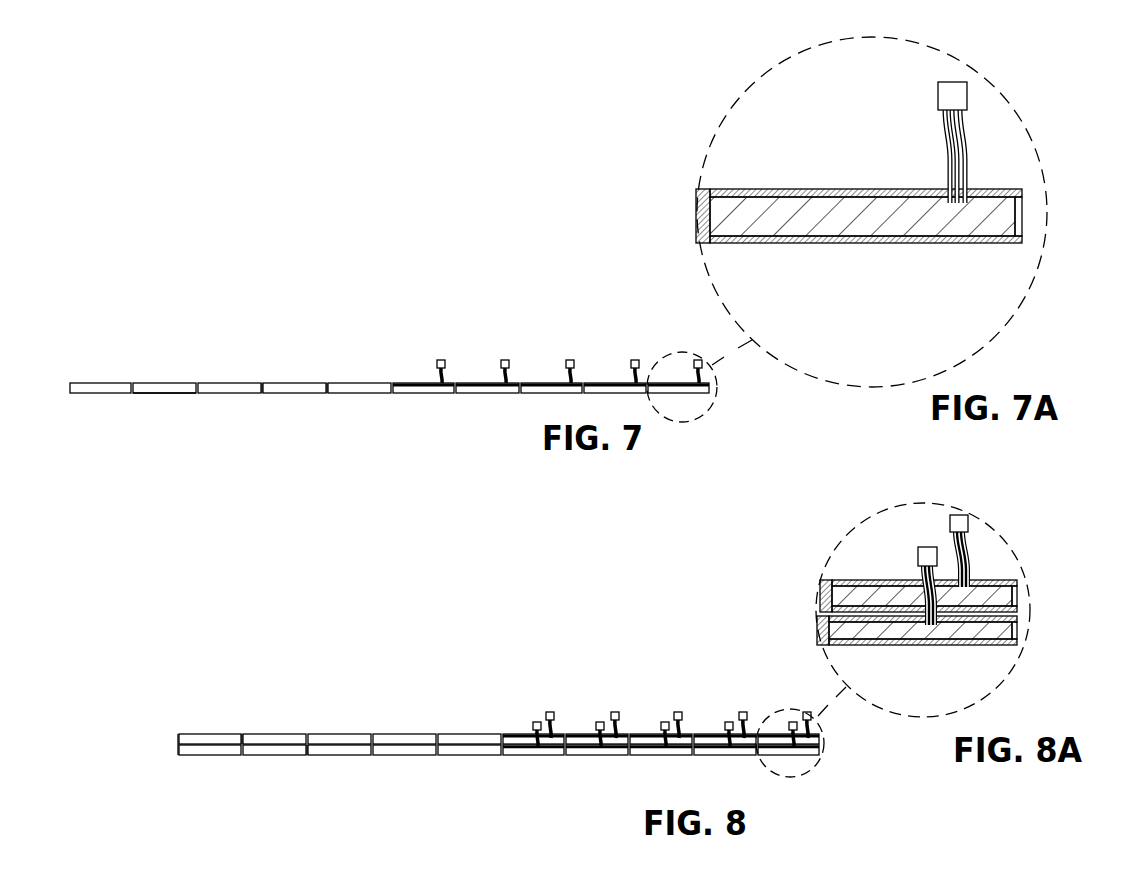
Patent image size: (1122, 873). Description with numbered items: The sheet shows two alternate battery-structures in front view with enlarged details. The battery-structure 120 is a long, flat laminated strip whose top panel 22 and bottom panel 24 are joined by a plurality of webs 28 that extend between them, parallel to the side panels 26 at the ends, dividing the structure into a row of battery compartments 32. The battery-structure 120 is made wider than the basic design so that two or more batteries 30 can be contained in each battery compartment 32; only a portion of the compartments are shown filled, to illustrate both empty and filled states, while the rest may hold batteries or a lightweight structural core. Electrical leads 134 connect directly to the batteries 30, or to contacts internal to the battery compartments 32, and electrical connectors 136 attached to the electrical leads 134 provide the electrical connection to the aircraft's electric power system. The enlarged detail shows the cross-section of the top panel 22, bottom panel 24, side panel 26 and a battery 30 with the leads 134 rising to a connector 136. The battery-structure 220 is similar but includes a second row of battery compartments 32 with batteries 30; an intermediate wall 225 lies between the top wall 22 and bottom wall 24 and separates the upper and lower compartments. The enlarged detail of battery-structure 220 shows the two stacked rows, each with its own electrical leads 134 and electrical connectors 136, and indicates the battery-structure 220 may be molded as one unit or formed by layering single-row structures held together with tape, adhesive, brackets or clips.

In FIG. 7, the top panel 22 is at (191, 383).
In FIG. 7A, the top panel 22 is at (836, 189).
In FIG. 8, the top panel 22 is at (218, 734).
In FIG. 8A, the top panel 22 is at (878, 580).
In FIG. 7, the bottom panel 24 is at (175, 393).
In FIG. 7A, the bottom panel 24 is at (853, 243).
In FIG. 8, the bottom panel 24 is at (217, 755).
In FIG. 8A, the bottom panel 24 is at (958, 645).
In FIG. 7, the side panels 26 is at (70, 391).
In FIG. 7A, the side panels 26 is at (1022, 225).
In FIG. 8, the side panels 26 is at (178, 737).
In FIG. 8A, the side panels 26 is at (1017, 630).
In FIG. 7, the webs 28 is at (262, 393).
In FIG. 7A, the webs 28 is at (688, 212).
In FIG. 8, the webs 28 is at (245, 737).
In FIG. 8A, the webs 28 is at (820, 595).
In FIG. 7, the batteries 30 is at (437, 393).
In FIG. 7A, the batteries 30 is at (923, 230).
In FIG. 8, the batteries 30 is at (585, 737).
In FIG. 8A, the batteries 30 is at (1012, 583).
In FIG. 7, the battery compartments 32 is at (347, 383).
In FIG. 8, the battery compartments 32 is at (282, 748).
In FIG. 7, the battery-structure 120 is at (285, 372).
In FIG. 7, the electrical leads 134 is at (509, 372).
In FIG. 7A, the electrical leads 134 is at (965, 152).
In FIG. 8, the electrical leads 134 is at (678, 712).
In FIG. 8A, the electrical leads 134 is at (969, 545).
In FIG. 7A, the electrical connectors 136 is at (960, 95).
In FIG. 8, the electrical connectors 136 is at (745, 712).
In FIG. 8A, the electrical connectors 136 is at (958, 515).
In FIG. 8, the battery-structure 220 is at (424, 706).
In FIG. 8, the intermediate wall 225 is at (345, 740).
In FIG. 8A, the intermediate wall 225 is at (1013, 609).